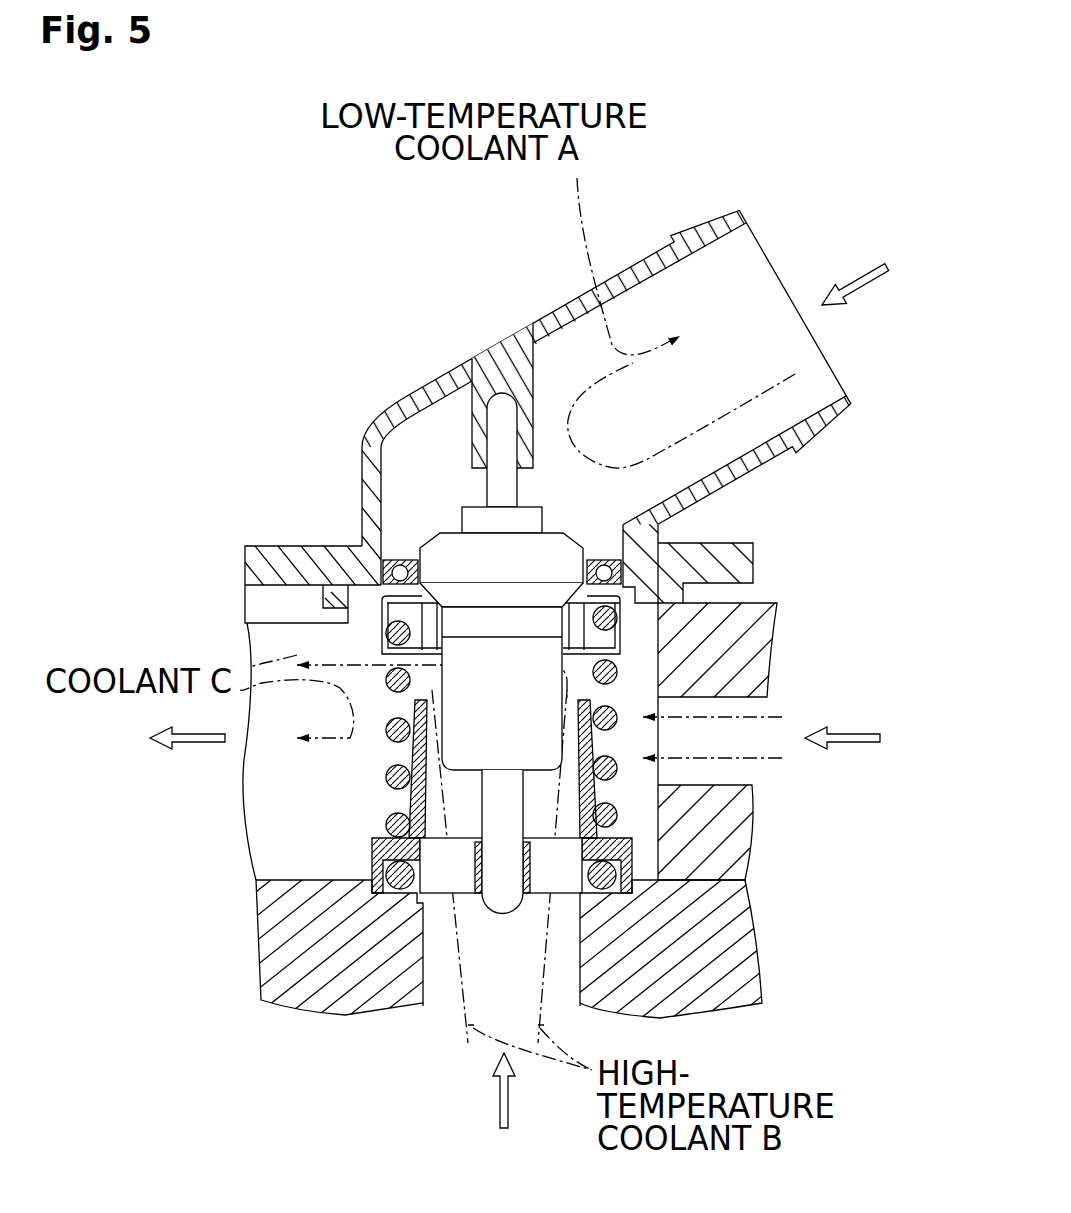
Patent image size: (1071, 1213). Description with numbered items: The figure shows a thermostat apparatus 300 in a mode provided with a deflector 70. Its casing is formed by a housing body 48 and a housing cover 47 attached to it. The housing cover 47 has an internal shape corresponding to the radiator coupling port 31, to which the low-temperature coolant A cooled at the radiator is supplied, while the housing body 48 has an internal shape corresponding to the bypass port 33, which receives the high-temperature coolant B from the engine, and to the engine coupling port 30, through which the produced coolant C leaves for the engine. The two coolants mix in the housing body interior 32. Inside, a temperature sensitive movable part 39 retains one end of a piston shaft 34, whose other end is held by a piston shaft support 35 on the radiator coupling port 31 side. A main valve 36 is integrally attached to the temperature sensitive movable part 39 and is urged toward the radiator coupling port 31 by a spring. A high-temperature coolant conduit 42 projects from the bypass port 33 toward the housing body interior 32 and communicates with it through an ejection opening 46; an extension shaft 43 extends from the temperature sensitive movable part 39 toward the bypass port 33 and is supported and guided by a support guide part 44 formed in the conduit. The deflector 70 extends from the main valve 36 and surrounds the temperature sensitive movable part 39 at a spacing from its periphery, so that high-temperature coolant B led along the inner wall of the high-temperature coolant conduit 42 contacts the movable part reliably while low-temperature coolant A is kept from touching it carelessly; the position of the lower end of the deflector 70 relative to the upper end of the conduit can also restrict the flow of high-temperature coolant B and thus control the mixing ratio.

The thermostat apparatus 300 is at (320, 463).
The engine coupling port 30 is at (268, 848).
The radiator coupling port 31 is at (590, 518).
The housing body interior 32 is at (643, 673).
The bypass port 33 is at (557, 940).
The piston shaft 34 is at (500, 398).
The piston shaft support 35 is at (481, 372).
The main valve 36 is at (346, 552).
The temperature sensitive movable part 39 is at (483, 651).
The high-temperature coolant conduit 42 is at (408, 800).
The extension shaft 43 is at (503, 898).
The support guide part 44 is at (545, 855).
The ejection opening 46 is at (662, 690).
The housing cover 47 is at (698, 232).
The housing body 48 is at (722, 940).
The deflector 70 is at (628, 637).